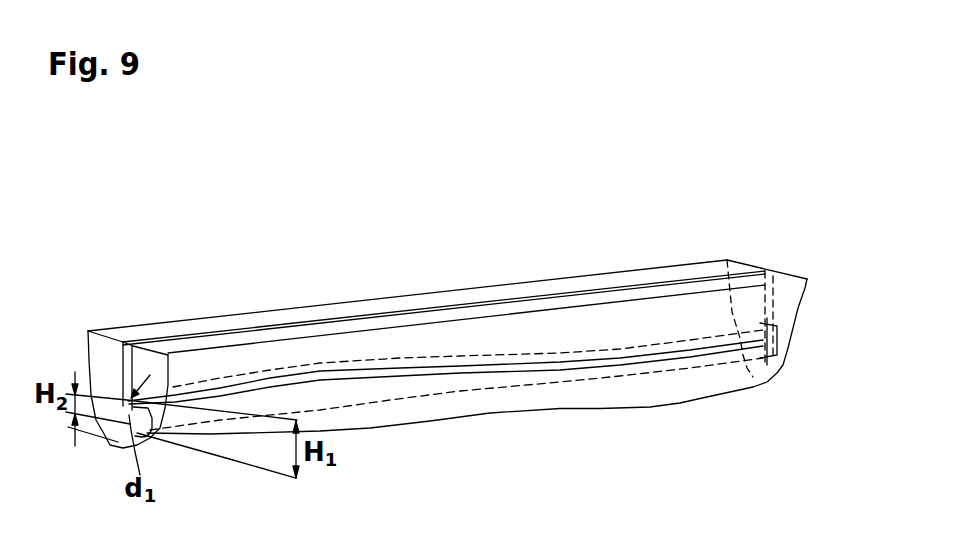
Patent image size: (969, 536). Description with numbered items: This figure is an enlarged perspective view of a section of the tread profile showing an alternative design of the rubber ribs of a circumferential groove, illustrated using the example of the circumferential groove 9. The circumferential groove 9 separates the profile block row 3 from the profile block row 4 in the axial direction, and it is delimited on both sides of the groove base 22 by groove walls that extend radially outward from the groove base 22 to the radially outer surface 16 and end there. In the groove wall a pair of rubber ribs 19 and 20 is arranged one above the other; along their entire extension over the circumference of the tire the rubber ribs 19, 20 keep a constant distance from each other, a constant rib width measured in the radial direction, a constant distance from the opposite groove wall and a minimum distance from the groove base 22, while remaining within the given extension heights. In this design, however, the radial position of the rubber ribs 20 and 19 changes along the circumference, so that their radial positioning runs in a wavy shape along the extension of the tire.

The profile block row 3 is at (210, 323).
The profile block row 4 is at (345, 322).
The circumferential groove 9 is at (168, 352).
The radially outer surface 16 is at (275, 308).
The rubber rib 19 is at (397, 374).
The rubber rib 20 is at (127, 402).
The groove base 22 is at (131, 419).